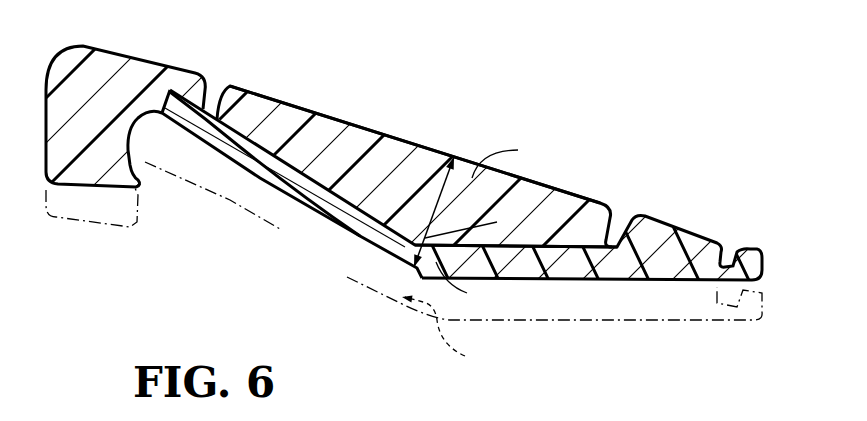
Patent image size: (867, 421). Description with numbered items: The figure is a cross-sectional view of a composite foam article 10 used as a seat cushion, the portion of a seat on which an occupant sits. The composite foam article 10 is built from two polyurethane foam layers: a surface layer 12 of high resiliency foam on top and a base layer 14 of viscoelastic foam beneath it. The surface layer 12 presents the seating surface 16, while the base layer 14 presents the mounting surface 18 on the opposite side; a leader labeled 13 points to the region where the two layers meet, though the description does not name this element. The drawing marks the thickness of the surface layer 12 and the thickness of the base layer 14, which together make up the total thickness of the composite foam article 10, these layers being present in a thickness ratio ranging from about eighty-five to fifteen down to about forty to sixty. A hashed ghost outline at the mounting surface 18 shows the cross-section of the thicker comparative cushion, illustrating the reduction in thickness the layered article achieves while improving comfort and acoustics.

The composite foam article 10 is at (433, 195).
The surface layer 12 is at (395, 182).
The interface between plate and bottom layer 13 is at (526, 250).
The base layer 14 is at (629, 276).
The seating surface 16 is at (323, 112).
The mounting surface 18 is at (257, 176).